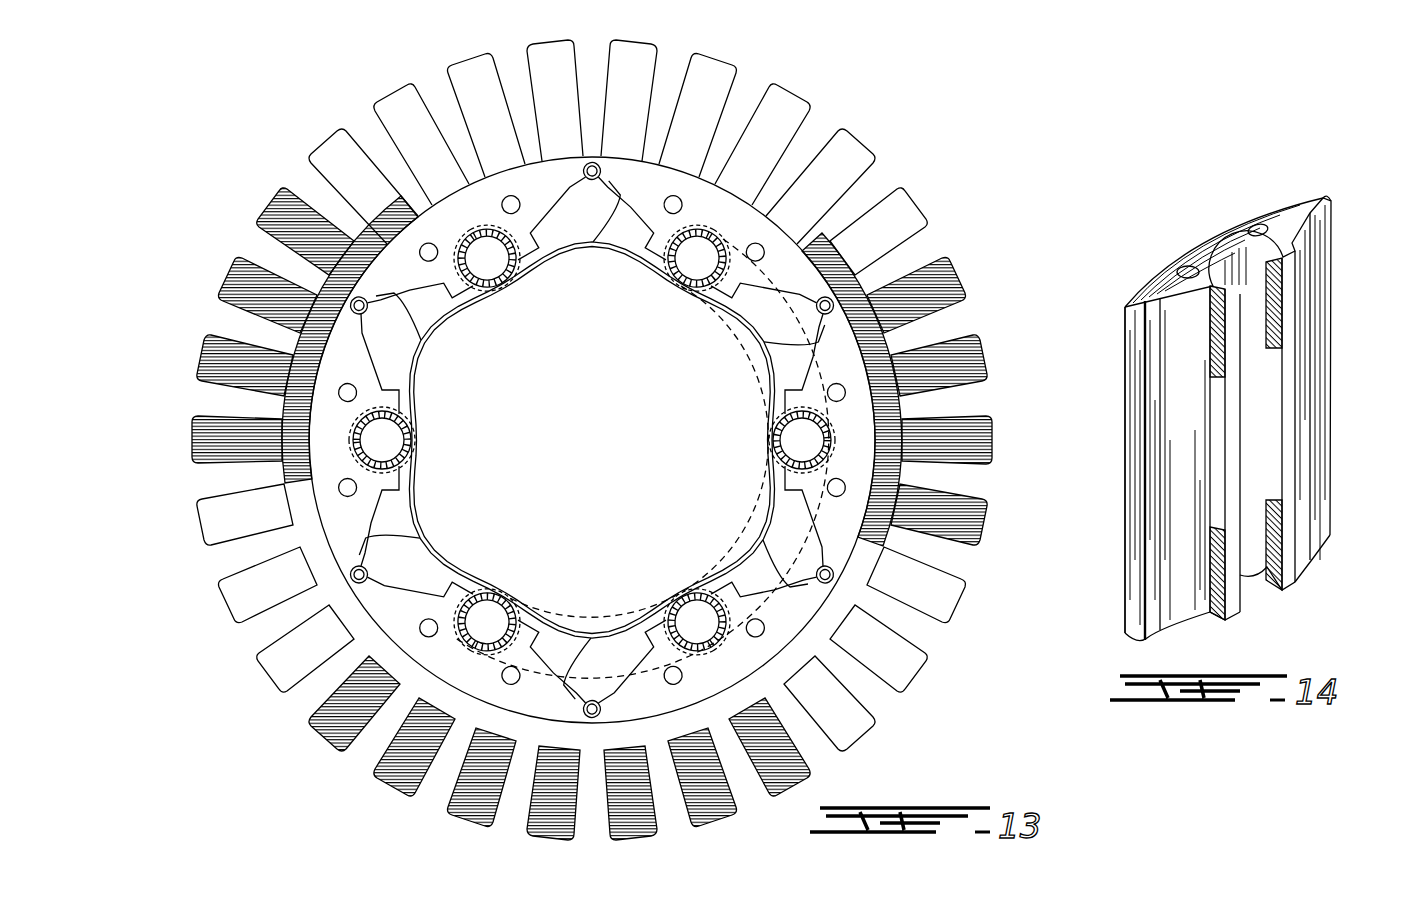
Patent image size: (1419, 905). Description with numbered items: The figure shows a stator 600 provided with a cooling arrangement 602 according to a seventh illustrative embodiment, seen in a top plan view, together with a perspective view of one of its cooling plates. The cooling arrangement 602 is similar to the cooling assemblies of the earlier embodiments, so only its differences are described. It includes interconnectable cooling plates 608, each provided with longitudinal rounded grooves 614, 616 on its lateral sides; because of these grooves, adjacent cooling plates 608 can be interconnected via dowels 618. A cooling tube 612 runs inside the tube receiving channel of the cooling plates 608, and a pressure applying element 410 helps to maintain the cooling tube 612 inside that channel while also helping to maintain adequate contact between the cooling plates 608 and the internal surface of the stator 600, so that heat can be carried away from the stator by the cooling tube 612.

In FIG. 13, the stator 600 is at (318, 136).
In FIG. 13, the cooling plate 608 is at (735, 222).
In FIG. 14, the cooling plate 608 is at (1228, 230).
In FIG. 13, the dowel 618 is at (834, 300).
In FIG. 13, the cooling tube 612 is at (490, 285).
In FIG. 13, the pressure applying element 410 is at (593, 249).
In FIG. 13, the cooling arrangement 602 is at (674, 291).
In FIG. 14, the longitudinal rounded groove 614 is at (1135, 336).
In FIG. 14, the longitudinal rounded groove 616 is at (1333, 200).